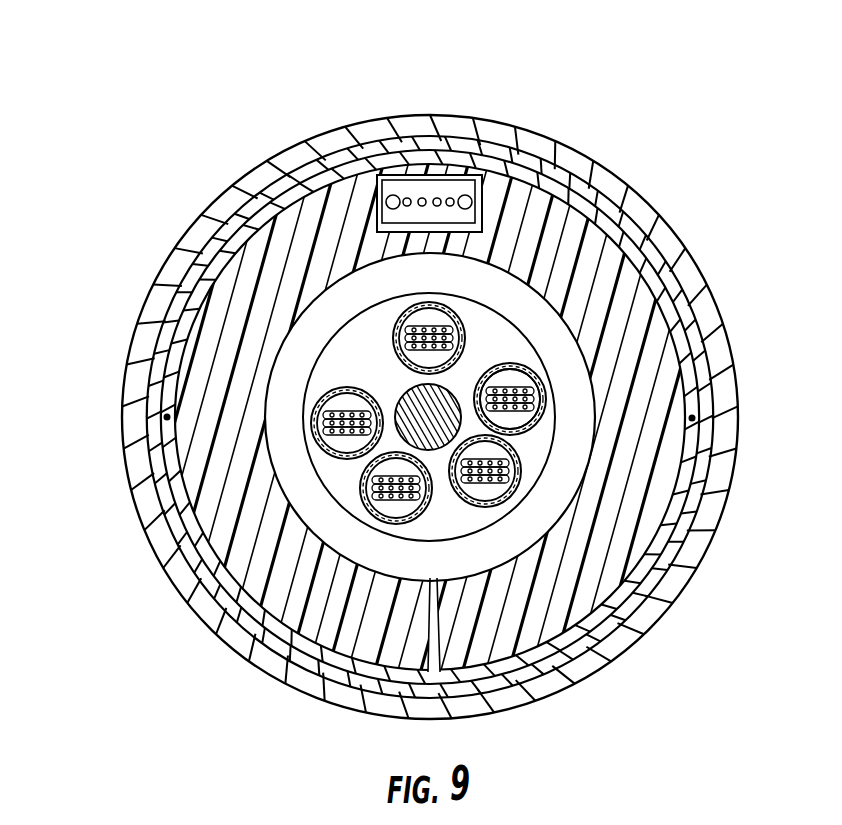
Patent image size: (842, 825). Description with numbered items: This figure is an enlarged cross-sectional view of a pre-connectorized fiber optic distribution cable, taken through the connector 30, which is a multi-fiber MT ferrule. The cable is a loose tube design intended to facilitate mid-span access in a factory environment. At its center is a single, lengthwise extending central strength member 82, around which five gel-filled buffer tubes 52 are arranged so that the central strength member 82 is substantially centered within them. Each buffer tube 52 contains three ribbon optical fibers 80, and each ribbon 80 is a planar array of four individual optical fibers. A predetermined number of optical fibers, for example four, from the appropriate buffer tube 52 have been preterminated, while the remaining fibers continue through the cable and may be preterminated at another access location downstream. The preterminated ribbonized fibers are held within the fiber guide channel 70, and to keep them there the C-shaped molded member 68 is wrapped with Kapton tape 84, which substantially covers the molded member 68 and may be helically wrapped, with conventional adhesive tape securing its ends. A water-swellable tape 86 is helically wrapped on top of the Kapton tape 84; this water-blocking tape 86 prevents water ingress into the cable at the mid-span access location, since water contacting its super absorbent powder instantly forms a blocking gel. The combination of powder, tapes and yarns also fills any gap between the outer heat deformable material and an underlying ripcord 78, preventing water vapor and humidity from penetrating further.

The connector 30 is at (449, 175).
The buffer tube 52 is at (653, 313).
The C-shaped molded member 68 is at (565, 222).
The fiber guide channel 70 is at (407, 172).
The ripcord 78 is at (167, 418).
The ribbon optical fiber 80 is at (543, 395).
The central strength member 82 is at (407, 403).
The Kapton tape 84 is at (313, 182).
The water-swellable tape 86 is at (155, 368).